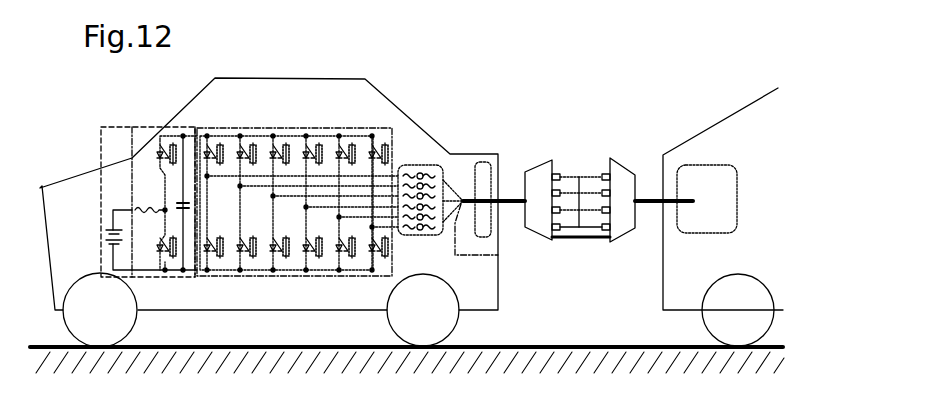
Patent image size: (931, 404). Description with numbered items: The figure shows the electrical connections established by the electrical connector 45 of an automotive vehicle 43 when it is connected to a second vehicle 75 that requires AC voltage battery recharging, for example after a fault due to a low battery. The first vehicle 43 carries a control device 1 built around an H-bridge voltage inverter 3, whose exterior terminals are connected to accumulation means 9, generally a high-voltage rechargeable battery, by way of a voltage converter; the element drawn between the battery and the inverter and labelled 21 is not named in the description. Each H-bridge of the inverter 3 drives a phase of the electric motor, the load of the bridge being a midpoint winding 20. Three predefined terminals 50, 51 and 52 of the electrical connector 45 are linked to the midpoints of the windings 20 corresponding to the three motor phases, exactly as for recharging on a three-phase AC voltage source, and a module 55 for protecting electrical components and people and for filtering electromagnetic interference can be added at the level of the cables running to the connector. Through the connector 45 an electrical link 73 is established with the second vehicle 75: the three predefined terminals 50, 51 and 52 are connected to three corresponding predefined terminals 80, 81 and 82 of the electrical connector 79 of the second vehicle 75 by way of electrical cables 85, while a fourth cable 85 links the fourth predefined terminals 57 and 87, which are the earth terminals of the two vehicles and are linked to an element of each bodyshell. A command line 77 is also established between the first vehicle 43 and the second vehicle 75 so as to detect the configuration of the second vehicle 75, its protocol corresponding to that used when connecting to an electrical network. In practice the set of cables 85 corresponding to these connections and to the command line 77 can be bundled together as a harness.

The control device 1 is at (269, 186).
The H-bridge voltage inverter 3 is at (258, 128).
The accumulation means 9 is at (106, 126).
The midpoint winding 20 is at (424, 165).
The DC/DC converter 21 is at (150, 126).
The automotive vehicle 43 is at (390, 98).
The electrical connector 45 is at (538, 243).
The predetermined terminal 50 is at (530, 176).
The predetermined terminal 51 is at (548, 193).
The predetermined terminal 52 is at (540, 212).
The protection and filtering module 55 is at (484, 162).
The fourth predefined terminal 57 is at (562, 243).
The electrical link 73 is at (587, 200).
The second vehicle 75 is at (742, 108).
The command line 77 is at (577, 242).
The electrical connector 79 is at (638, 212).
The predefined terminal 80 is at (632, 167).
The predefined terminal 81 is at (645, 205).
The predefined terminal 82 is at (620, 241).
The electrical cables 85 is at (590, 196).
The fourth predefined terminal 87 is at (603, 243).